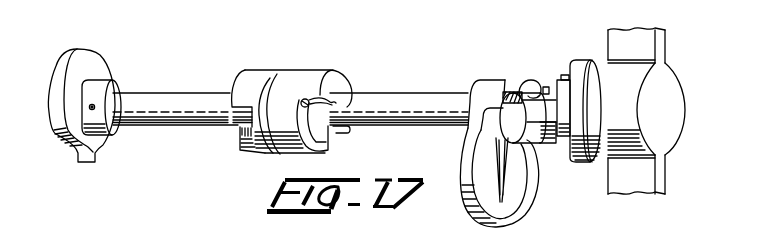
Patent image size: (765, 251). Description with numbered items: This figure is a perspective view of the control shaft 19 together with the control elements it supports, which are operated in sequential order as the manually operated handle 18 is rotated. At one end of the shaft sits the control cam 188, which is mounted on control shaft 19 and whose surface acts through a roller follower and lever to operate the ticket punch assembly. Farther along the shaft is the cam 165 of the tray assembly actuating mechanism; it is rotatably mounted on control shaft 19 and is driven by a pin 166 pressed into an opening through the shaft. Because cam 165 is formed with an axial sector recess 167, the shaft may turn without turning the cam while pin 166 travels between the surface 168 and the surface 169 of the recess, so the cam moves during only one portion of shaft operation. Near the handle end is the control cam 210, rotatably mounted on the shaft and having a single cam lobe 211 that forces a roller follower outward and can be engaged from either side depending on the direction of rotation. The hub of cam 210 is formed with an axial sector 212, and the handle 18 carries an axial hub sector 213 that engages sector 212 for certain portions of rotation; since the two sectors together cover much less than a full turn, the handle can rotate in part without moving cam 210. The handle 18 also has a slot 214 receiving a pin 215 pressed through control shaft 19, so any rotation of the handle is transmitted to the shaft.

The control cam 188 is at (67, 60).
The control shaft 19 is at (191, 97).
The cam 165 is at (303, 66).
The pin 166 is at (305, 99).
The axial sector recess 167 is at (318, 142).
The surface 168 is at (336, 103).
The surface 169 is at (346, 131).
The control cam 210 is at (509, 77).
The cam lobe 211 is at (504, 220).
The axial sector 212 is at (541, 52).
The axial hub sector 213 is at (544, 141).
The slot 214 is at (567, 75).
The pin 215 is at (546, 86).
The manually operated handle 18 is at (676, 91).